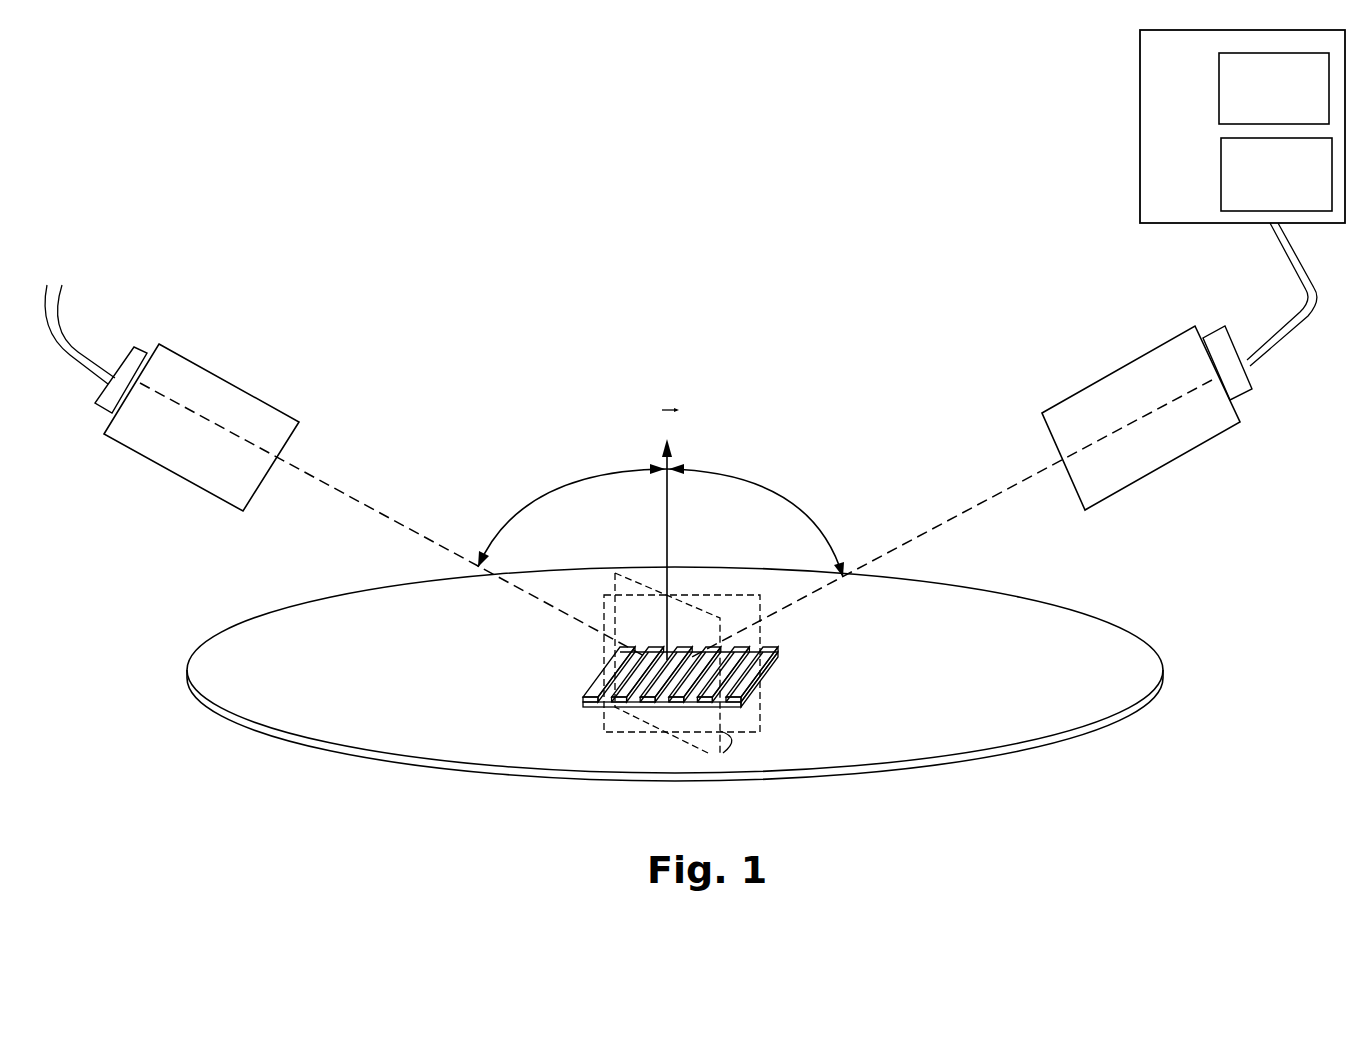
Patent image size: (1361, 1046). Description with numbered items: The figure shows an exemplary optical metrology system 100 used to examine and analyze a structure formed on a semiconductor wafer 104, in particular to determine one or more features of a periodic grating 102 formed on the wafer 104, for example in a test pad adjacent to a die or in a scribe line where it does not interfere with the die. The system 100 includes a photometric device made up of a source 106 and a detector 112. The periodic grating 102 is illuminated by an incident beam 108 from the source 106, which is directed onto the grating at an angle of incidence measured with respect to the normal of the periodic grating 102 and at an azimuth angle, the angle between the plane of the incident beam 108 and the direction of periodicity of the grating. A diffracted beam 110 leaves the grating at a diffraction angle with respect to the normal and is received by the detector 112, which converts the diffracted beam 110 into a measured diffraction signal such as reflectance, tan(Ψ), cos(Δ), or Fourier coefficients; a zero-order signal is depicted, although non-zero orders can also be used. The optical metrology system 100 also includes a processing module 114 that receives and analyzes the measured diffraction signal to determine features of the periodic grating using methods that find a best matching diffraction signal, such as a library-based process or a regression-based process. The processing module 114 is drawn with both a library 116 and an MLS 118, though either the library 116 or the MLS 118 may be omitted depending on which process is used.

The optical metrology system 100 is at (250, 170).
The periodic grating 102 is at (583, 724).
The semiconductor wafer 104 is at (267, 613).
The source 106 is at (203, 370).
The incident beam 108 is at (313, 480).
The diffracted beam 110 is at (962, 510).
The detector 112 is at (1247, 420).
The processing module 114 is at (1242, 126).
The library 116 is at (1276, 174).
The MLS 118 is at (1274, 88).